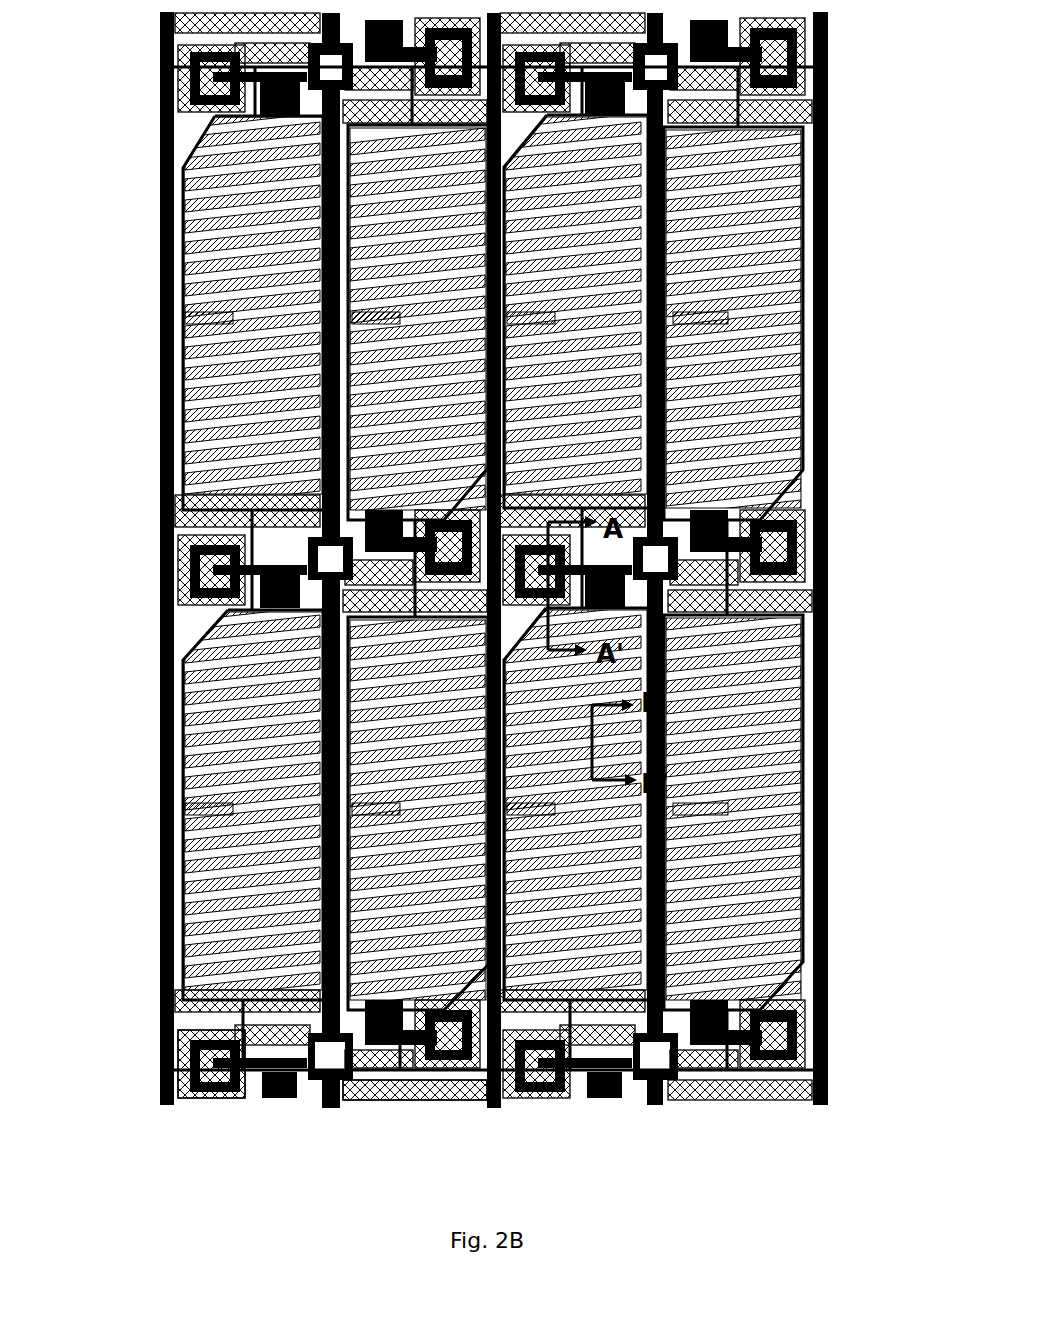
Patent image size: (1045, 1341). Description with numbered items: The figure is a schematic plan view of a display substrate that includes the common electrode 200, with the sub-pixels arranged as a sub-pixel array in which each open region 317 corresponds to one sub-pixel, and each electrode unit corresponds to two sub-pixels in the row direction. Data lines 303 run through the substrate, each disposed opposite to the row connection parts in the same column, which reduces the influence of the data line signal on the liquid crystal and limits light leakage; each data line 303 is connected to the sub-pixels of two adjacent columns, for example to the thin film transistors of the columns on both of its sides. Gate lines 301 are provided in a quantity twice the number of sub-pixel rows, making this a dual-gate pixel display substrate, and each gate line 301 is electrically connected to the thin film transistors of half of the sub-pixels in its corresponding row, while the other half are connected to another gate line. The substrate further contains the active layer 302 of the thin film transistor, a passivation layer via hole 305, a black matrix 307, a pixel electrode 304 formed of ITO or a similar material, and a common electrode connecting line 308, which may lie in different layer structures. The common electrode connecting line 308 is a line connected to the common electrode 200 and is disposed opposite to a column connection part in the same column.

The common electrode 200 is at (167, 172).
The gate line 301 is at (215, 535).
The active layer 302 is at (252, 1090).
The data line 303 is at (507, 1103).
The pixel electrode 304 is at (420, 1090).
The passivation layer via hole 305 is at (658, 1058).
The black matrix 307 is at (617, 1098).
The common electrode connecting line 308 is at (337, 1103).
The open region 317 is at (828, 735).